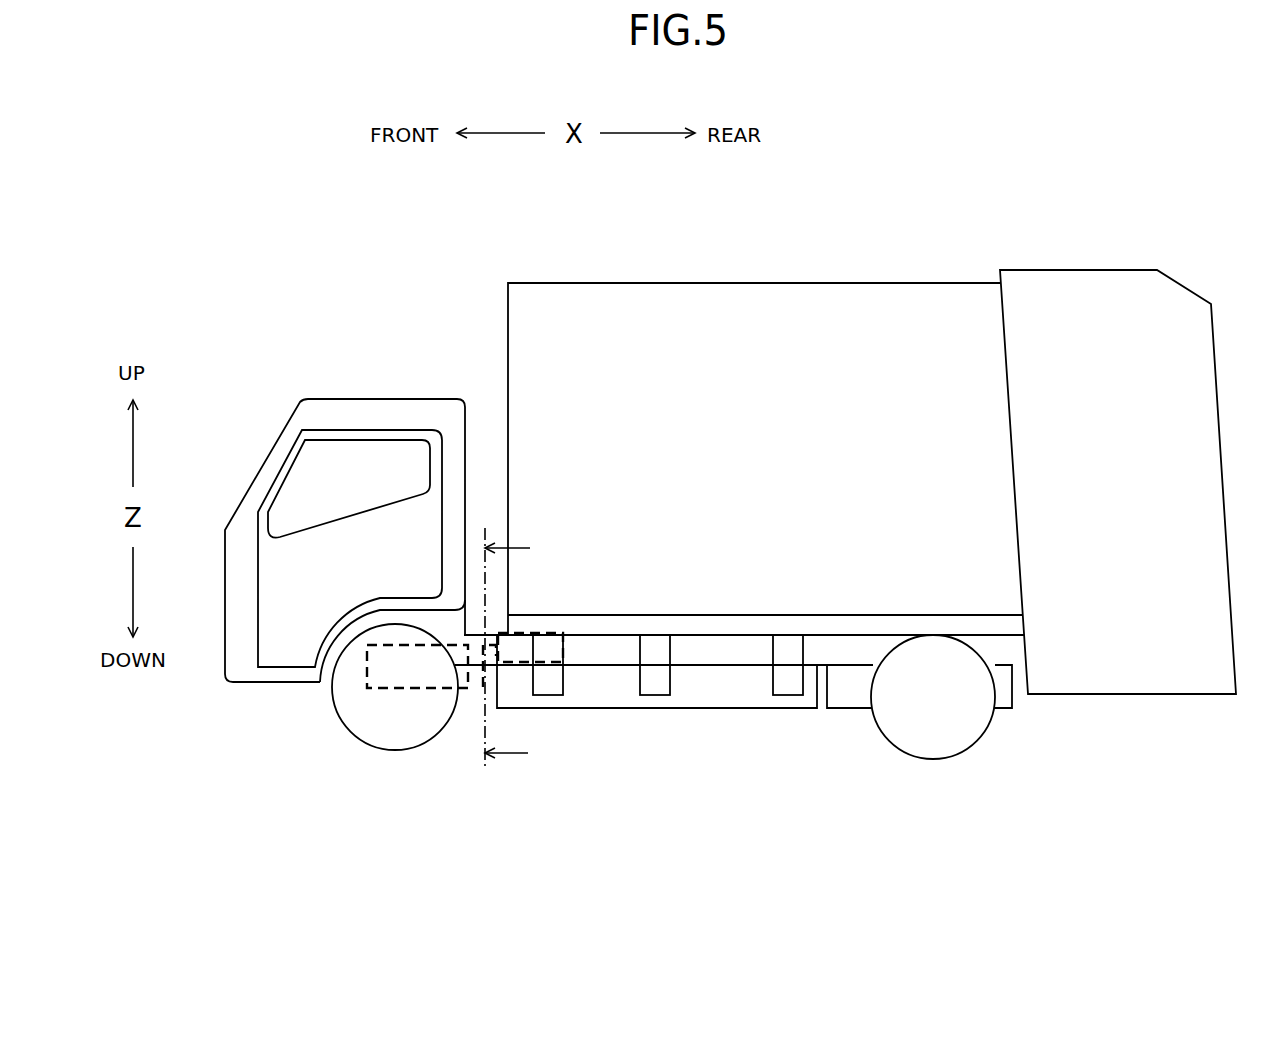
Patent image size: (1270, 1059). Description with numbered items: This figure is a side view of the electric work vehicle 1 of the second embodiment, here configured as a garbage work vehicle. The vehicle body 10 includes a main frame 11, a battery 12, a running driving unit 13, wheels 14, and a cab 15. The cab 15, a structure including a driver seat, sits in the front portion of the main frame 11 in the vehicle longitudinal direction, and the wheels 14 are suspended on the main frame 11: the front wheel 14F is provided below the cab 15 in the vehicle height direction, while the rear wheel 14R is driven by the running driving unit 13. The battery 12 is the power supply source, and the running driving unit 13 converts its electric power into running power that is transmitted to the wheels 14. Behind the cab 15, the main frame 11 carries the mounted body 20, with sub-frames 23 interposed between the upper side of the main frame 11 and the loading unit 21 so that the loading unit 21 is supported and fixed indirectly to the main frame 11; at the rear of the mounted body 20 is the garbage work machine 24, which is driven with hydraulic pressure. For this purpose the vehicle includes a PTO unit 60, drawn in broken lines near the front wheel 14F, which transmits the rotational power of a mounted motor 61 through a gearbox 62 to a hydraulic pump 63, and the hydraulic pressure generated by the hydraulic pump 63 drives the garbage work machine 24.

The electric work vehicle 1 is at (333, 262).
The vehicle body 10 is at (613, 782).
The main frame 11 is at (1017, 643).
The battery 12 is at (713, 708).
The running driving unit 13 is at (853, 708).
The wheels 14 is at (599, 734).
The front wheel 14F is at (337, 710).
The rear wheel 14R is at (947, 760).
The cab 15 is at (329, 399).
The mounted body 20 is at (921, 253).
The freezing loading unit 21 is at (781, 283).
The sub-frames 23 is at (963, 627).
The garbage work machine 24 is at (1087, 270).
The PTO unit 60 is at (485, 827).
The mounted motor 61 is at (407, 690).
The gearbox 62 is at (480, 688).
The hydraulic pump 63 is at (525, 662).